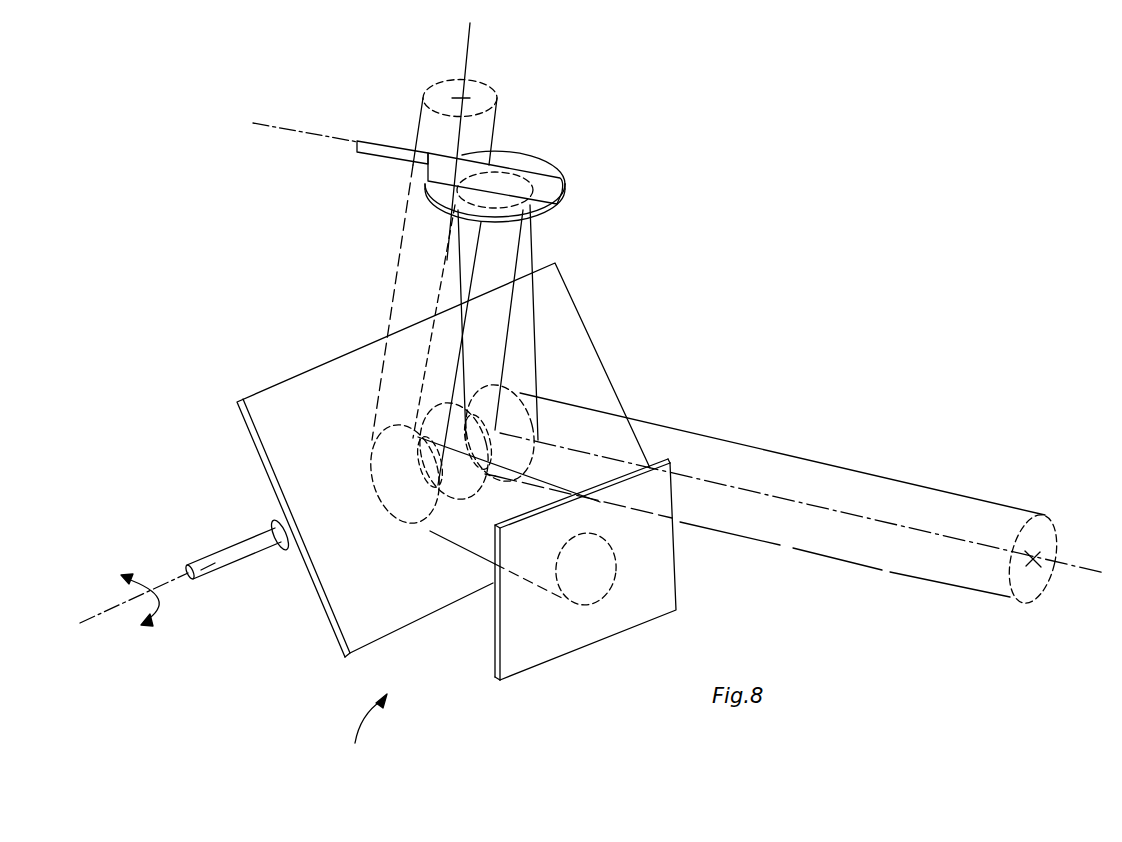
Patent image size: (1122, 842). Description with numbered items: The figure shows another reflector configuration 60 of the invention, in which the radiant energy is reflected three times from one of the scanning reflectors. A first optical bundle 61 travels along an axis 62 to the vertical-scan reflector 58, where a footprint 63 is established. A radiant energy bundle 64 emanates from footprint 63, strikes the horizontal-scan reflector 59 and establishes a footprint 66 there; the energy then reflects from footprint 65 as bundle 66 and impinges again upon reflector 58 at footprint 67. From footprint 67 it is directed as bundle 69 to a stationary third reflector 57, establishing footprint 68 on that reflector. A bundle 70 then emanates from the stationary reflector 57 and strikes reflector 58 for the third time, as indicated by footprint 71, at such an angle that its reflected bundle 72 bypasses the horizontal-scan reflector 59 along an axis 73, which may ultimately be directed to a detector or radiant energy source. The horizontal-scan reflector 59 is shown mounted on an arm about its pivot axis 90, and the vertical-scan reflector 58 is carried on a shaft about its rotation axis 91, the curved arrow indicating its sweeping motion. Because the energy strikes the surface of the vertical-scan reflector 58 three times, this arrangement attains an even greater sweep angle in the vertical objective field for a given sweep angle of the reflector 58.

The stationary third reflector 57 is at (590, 645).
The vertical-scan reflector 58 is at (618, 400).
The horizontal-scan reflector 59 is at (558, 203).
The optical assembly 60 is at (362, 734).
The first optical bundle 61 is at (935, 489).
The axis 62 is at (1093, 575).
The footprint 63 is at (523, 410).
The radiant energy bundle 64 is at (533, 299).
The footprint 65 is at (532, 183).
The footprint / bundle 66 is at (513, 327).
The footprint 67 is at (422, 415).
The footprint 68 is at (607, 580).
The bundle 69 is at (542, 480).
The bundle 70 is at (453, 545).
The footprint 71 is at (368, 460).
The reflected bundle 72 is at (492, 144).
The axis 73 is at (463, 65).
The lens pivot arm axis 90 is at (340, 142).
The disk rotation axis 91 is at (98, 610).